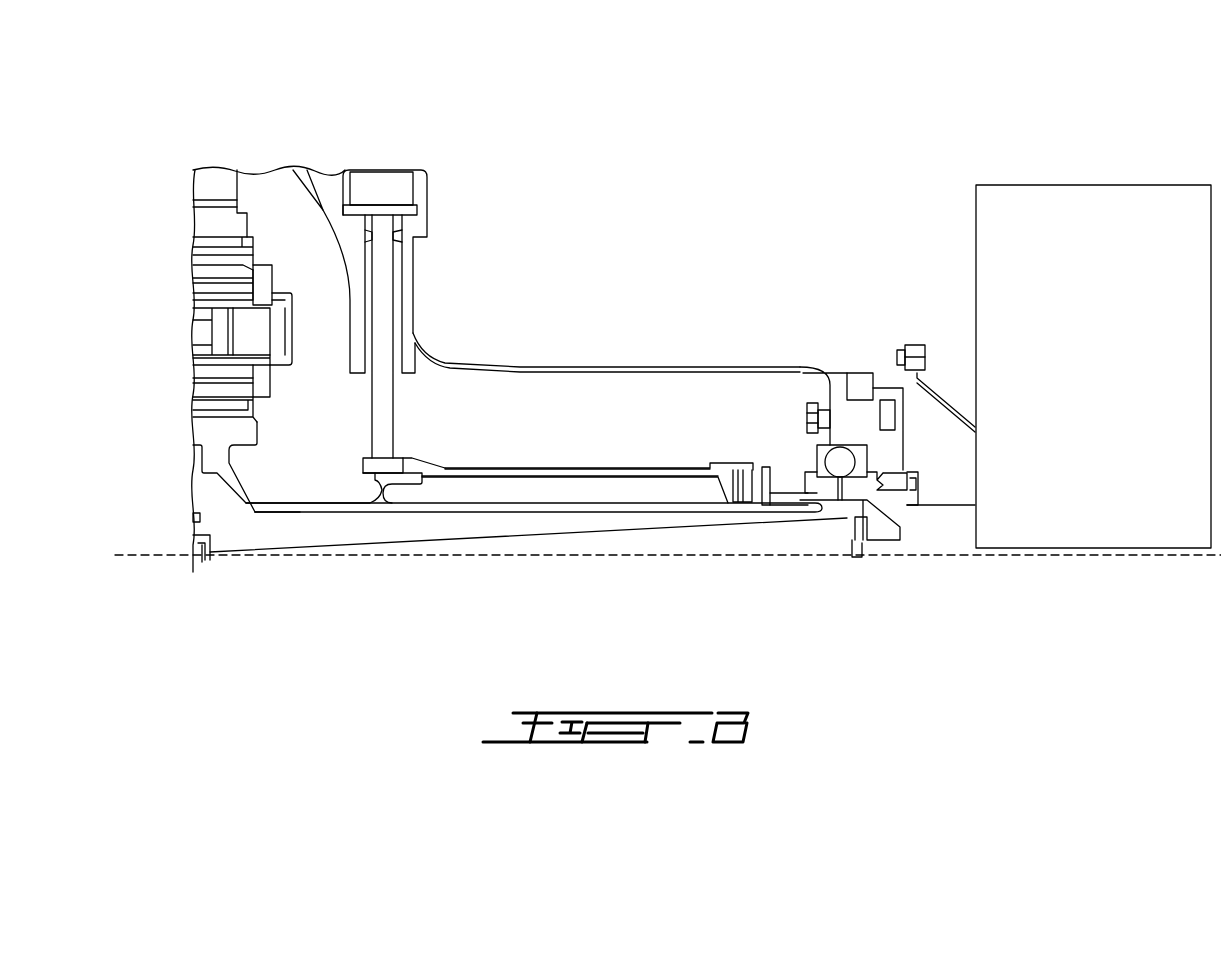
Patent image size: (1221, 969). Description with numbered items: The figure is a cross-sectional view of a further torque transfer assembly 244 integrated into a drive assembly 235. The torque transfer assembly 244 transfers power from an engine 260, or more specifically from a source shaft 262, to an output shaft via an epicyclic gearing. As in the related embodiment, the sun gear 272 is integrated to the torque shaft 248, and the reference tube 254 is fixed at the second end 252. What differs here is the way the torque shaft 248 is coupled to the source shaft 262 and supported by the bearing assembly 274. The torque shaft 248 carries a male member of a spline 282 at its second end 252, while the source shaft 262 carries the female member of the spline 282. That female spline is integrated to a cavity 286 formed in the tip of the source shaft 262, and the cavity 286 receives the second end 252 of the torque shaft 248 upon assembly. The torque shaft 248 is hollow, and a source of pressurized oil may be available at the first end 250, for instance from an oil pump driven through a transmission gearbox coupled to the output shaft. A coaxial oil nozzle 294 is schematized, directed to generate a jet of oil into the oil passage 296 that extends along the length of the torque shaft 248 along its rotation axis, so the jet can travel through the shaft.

The drive assembly 235 is at (615, 580).
The torque transfer assembly 244 is at (552, 470).
The torque shaft 248 is at (415, 513).
The first end 250 is at (265, 508).
The second end 252 is at (838, 515).
The reference tube 254 is at (633, 475).
The engine 260 is at (1098, 185).
The source shaft 262 is at (928, 535).
The sun gear 272 is at (225, 421).
The bearing assembly 274 is at (852, 445).
The spline 282 is at (780, 505).
The cavity 286 is at (890, 533).
The coaxial oil nozzle 294 is at (200, 553).
The oil passage 296 is at (540, 543).